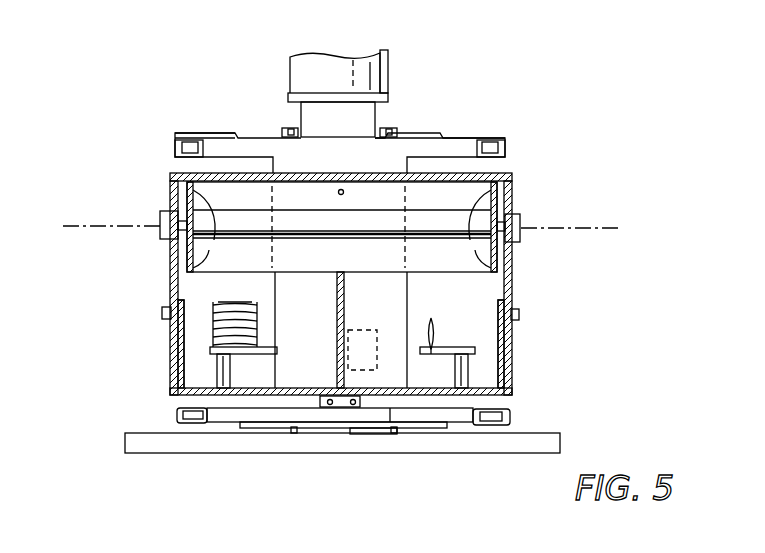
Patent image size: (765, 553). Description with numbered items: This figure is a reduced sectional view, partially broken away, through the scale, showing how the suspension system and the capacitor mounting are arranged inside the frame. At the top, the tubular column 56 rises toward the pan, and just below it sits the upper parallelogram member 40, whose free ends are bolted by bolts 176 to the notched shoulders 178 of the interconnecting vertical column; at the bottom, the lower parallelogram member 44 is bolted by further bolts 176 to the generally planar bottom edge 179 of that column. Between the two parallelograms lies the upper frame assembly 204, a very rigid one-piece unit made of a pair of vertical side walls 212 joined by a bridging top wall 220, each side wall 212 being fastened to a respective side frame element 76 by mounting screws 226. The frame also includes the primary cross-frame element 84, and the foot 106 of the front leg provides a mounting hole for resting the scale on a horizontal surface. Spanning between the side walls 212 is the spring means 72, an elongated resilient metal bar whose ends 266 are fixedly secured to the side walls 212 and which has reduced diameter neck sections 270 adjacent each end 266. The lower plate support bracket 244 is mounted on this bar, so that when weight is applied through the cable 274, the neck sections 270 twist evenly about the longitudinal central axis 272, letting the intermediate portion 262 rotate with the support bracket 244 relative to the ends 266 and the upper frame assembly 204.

The tubular column 56 is at (358, 63).
The bolts 176 is at (290, 130).
The notched shoulders 178 is at (283, 134).
The upper parallelogram member 40 is at (192, 140).
The bridging top wall 220 is at (502, 174).
The reduced diameter neck sections 270 is at (180, 206).
The longitudinal central axis 272 is at (88, 199).
The ends of the bar 266 is at (163, 232).
The upper frame assembly 204 is at (516, 255).
The vertical side walls 212 is at (172, 266).
The mounting screws 226 is at (162, 314).
The support bracket 244 is at (210, 250).
The spring means 72 is at (342, 227).
The intermediate portion 262 is at (291, 229).
The cable 274 is at (347, 321).
The side frame elements 76 is at (180, 345).
The lower parallelogram member 44 is at (176, 416).
The bottom edge 179 is at (312, 410).
The foot 106 is at (377, 442).
The primary cross-frame element 84 is at (472, 392).